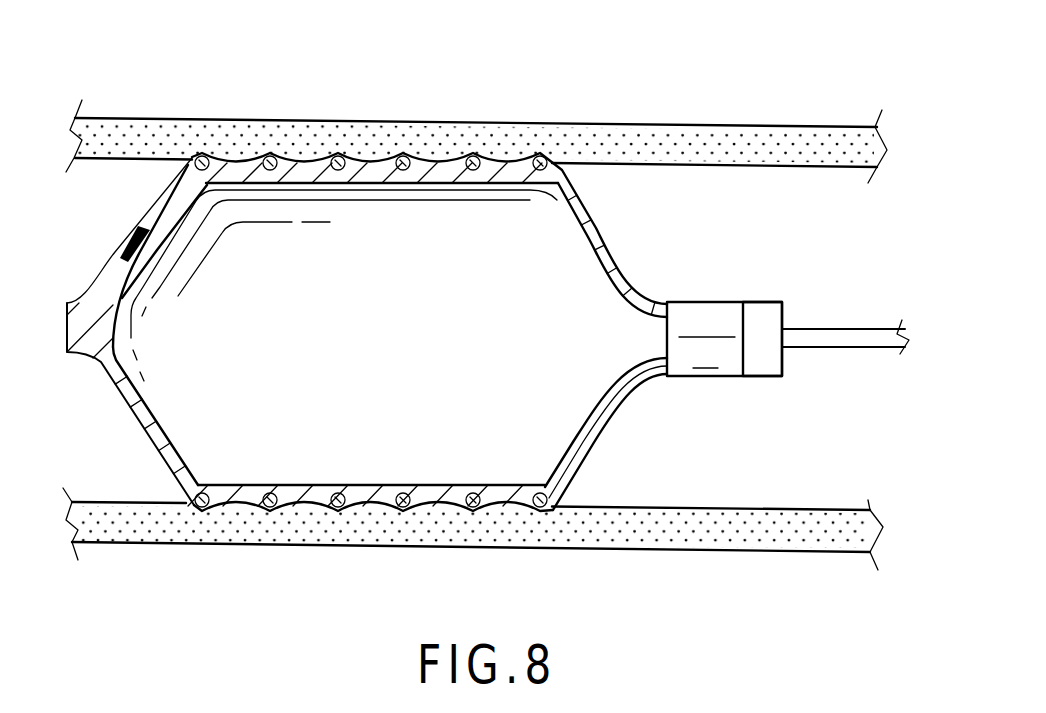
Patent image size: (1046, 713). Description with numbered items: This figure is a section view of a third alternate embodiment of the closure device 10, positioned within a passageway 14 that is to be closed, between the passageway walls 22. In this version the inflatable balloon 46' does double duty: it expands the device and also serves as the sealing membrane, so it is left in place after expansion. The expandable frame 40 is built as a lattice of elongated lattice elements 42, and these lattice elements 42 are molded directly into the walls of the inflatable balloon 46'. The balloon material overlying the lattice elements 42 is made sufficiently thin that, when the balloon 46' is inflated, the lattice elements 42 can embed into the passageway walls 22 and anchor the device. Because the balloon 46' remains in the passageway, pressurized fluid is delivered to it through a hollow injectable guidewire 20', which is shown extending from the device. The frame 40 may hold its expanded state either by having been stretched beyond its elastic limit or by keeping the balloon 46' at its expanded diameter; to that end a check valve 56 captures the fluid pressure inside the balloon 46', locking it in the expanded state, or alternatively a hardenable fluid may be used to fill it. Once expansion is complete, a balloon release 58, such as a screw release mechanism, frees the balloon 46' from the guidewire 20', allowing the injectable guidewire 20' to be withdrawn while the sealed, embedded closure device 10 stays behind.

The closure device 10 is at (371, 347).
The passageway 14 is at (475, 299).
The passageway walls 22 is at (299, 124).
The expandable frame 40 is at (198, 150).
The lattice elements 42 is at (407, 158).
The inflatable balloon 46' is at (614, 520).
The check valve 56 is at (783, 352).
The balloon release 58 is at (771, 313).
The hollow injectable guidewire 20' is at (845, 404).